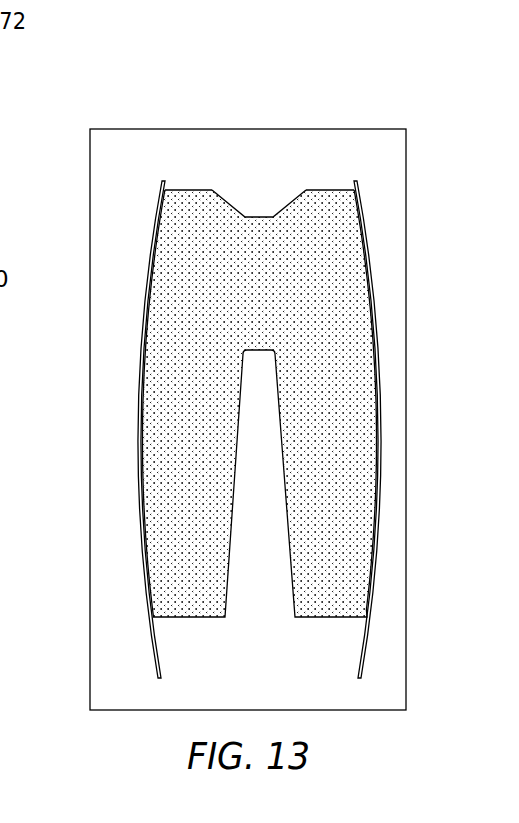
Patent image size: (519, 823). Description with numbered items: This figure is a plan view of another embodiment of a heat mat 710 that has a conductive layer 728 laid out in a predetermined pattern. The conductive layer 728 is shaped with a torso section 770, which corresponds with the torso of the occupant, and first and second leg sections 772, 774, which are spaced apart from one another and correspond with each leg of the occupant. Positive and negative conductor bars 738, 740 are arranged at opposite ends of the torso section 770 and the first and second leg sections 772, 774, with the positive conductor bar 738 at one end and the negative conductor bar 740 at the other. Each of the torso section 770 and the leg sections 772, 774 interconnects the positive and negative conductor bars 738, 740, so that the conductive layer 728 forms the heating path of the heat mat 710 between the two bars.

The heat mat 710 is at (387, 95).
The conductive layer 728 is at (337, 179).
The torso section 770 is at (215, 192).
The first leg section 772 is at (157, 458).
The second leg section 774 is at (363, 458).
The positive conductor bar 738 is at (155, 650).
The negative conductor bar 740 is at (363, 650).